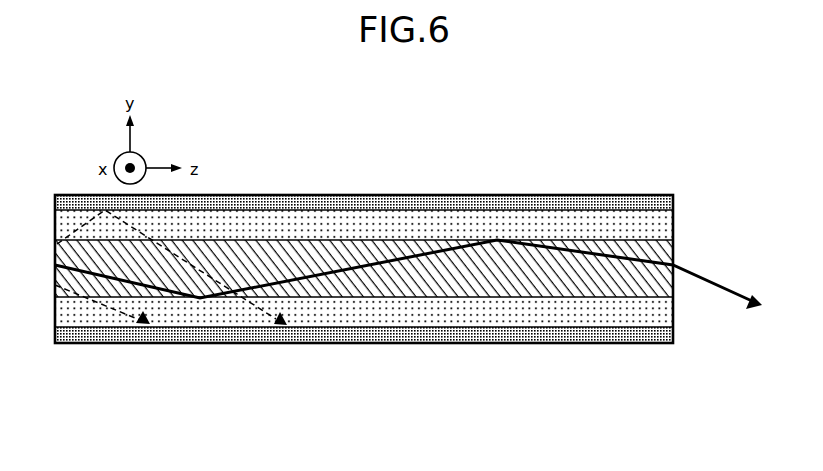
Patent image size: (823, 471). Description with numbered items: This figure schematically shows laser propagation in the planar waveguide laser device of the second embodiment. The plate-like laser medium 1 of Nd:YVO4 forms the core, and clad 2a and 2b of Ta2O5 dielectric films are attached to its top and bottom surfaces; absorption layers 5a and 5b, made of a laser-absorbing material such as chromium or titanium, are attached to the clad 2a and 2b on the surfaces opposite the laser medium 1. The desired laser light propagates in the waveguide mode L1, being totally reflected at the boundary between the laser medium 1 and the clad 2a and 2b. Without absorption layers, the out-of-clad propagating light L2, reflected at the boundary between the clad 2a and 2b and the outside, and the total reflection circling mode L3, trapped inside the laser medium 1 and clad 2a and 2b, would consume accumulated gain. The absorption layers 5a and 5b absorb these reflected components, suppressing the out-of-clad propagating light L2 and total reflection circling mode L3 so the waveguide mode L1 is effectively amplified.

The absorption layer 5b is at (77, 202).
The clad 2b is at (68, 222).
The laser medium 1 is at (62, 257).
The clad 2a is at (70, 311).
The absorption layer 5a is at (68, 337).
The waveguide mode L1 is at (709, 281).
The out-of-clad propagating light L2 is at (147, 328).
The total reflection circling mode L3 is at (284, 329).